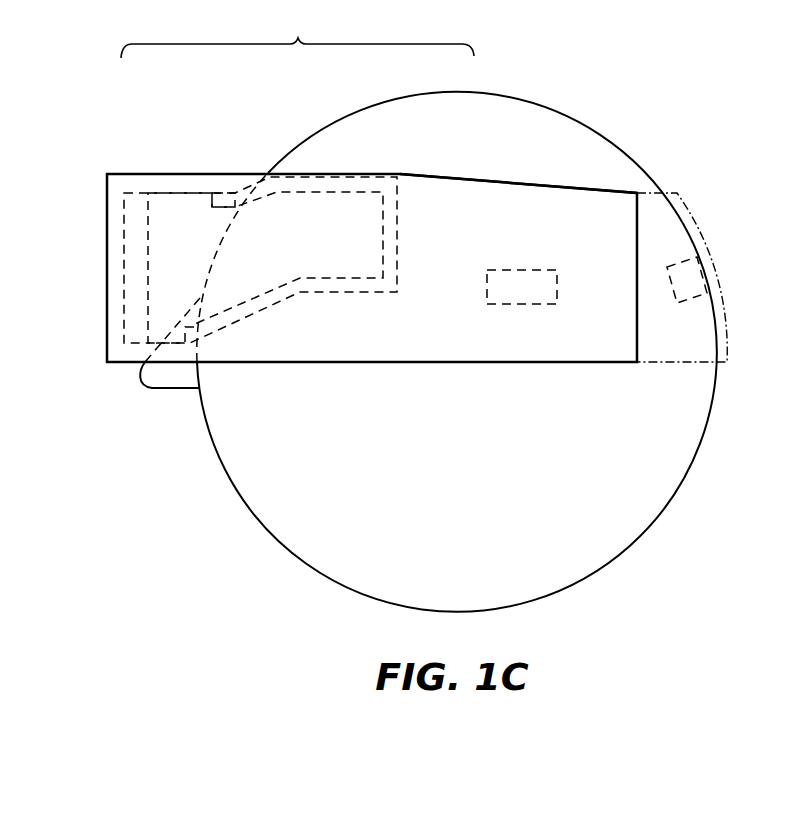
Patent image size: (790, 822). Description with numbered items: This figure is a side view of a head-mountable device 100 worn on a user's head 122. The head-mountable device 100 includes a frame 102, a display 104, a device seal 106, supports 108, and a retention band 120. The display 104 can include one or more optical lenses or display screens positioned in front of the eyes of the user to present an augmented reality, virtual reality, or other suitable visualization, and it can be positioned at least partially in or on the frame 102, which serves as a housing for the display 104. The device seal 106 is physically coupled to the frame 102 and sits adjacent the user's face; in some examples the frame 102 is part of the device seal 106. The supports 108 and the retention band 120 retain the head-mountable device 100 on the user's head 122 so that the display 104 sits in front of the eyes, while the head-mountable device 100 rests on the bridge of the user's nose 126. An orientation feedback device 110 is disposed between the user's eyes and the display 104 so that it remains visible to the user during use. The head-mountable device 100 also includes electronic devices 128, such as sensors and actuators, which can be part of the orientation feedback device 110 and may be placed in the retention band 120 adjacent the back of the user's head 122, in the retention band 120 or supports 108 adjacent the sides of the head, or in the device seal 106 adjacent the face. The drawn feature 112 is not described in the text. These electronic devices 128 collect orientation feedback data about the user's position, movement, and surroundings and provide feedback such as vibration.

The head-mountable device 100 is at (64, 187).
The frame 102 is at (125, 363).
The display 104 is at (119, 268).
The device seal 106 is at (297, 35).
The supports 108 is at (612, 205).
The orientation feedback device 110 is at (181, 201).
The tab 112 is at (238, 194).
The retention band 120 is at (698, 232).
The user's head 122 is at (300, 528).
The user's nose 126 is at (167, 378).
The electronic devices 128 is at (681, 262).